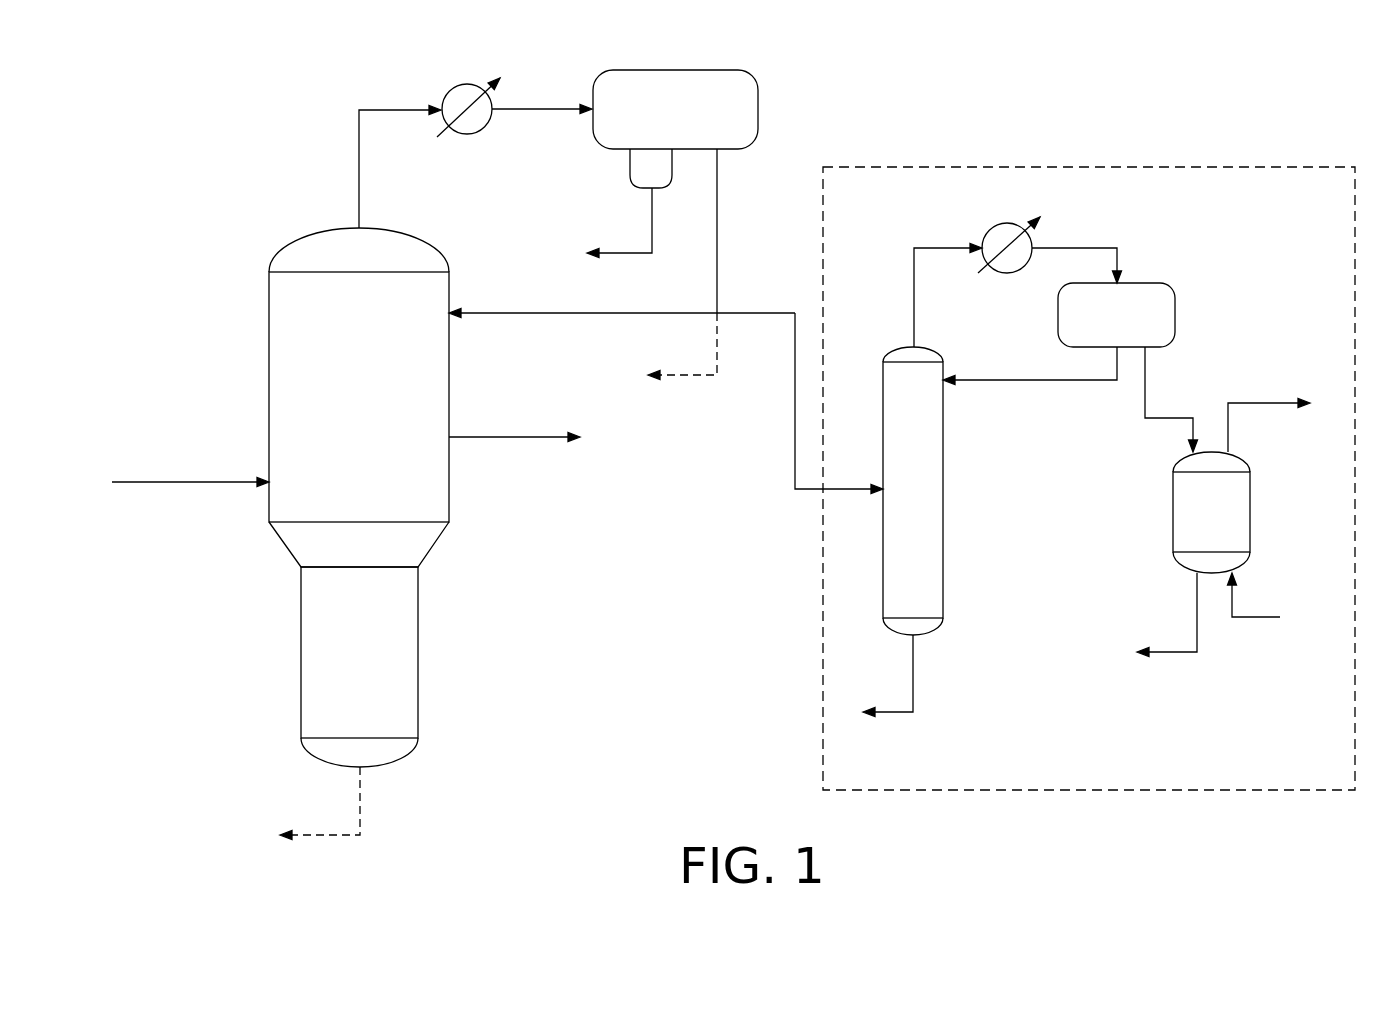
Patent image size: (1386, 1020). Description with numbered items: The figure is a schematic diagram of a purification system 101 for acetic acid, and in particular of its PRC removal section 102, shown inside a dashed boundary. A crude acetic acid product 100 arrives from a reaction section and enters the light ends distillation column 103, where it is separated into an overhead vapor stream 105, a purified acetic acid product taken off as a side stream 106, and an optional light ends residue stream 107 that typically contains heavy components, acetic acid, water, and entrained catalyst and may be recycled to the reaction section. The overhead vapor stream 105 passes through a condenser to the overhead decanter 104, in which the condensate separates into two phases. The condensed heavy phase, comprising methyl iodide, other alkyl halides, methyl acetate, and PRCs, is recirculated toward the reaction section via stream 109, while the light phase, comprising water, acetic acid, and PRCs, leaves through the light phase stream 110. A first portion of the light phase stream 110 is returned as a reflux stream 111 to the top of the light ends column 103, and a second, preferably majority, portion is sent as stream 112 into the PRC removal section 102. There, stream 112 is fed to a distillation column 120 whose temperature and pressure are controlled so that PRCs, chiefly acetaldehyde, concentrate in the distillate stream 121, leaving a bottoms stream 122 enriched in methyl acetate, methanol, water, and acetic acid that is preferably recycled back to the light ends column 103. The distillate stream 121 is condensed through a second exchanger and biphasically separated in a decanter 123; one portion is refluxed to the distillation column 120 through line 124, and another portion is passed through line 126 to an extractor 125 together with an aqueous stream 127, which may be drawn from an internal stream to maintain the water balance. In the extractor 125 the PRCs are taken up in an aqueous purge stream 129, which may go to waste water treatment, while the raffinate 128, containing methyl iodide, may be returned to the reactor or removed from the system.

The crude acetic acid product 100 is at (190, 468).
The purification system 101 is at (230, 155).
The PRC removal section 102 is at (1041, 547).
The light ends distillation column 103 is at (341, 396).
The overhead decanter 104 is at (660, 121).
The overhead vapor stream 105 is at (359, 150).
The side stream 106 is at (508, 437).
The light ends residue stream 107 is at (360, 808).
The heavy phase stream 109 is at (652, 222).
The light phase stream 110 is at (717, 237).
The reflux stream 111 is at (500, 310).
The PRS feed stream 112 is at (795, 442).
The distillation column 120 is at (896, 484).
The distillate stream 121 is at (914, 307).
The bottoms stream 122 is at (913, 678).
The decanter 123 is at (1100, 327).
The reflux line 124 is at (1038, 383).
The extractor 125 is at (1193, 522).
The extractor feed line 126 is at (1145, 373).
The aqueous stream 127 is at (1262, 620).
The raffinate 128 is at (1173, 657).
The aqueous purge stream 129 is at (1273, 400).